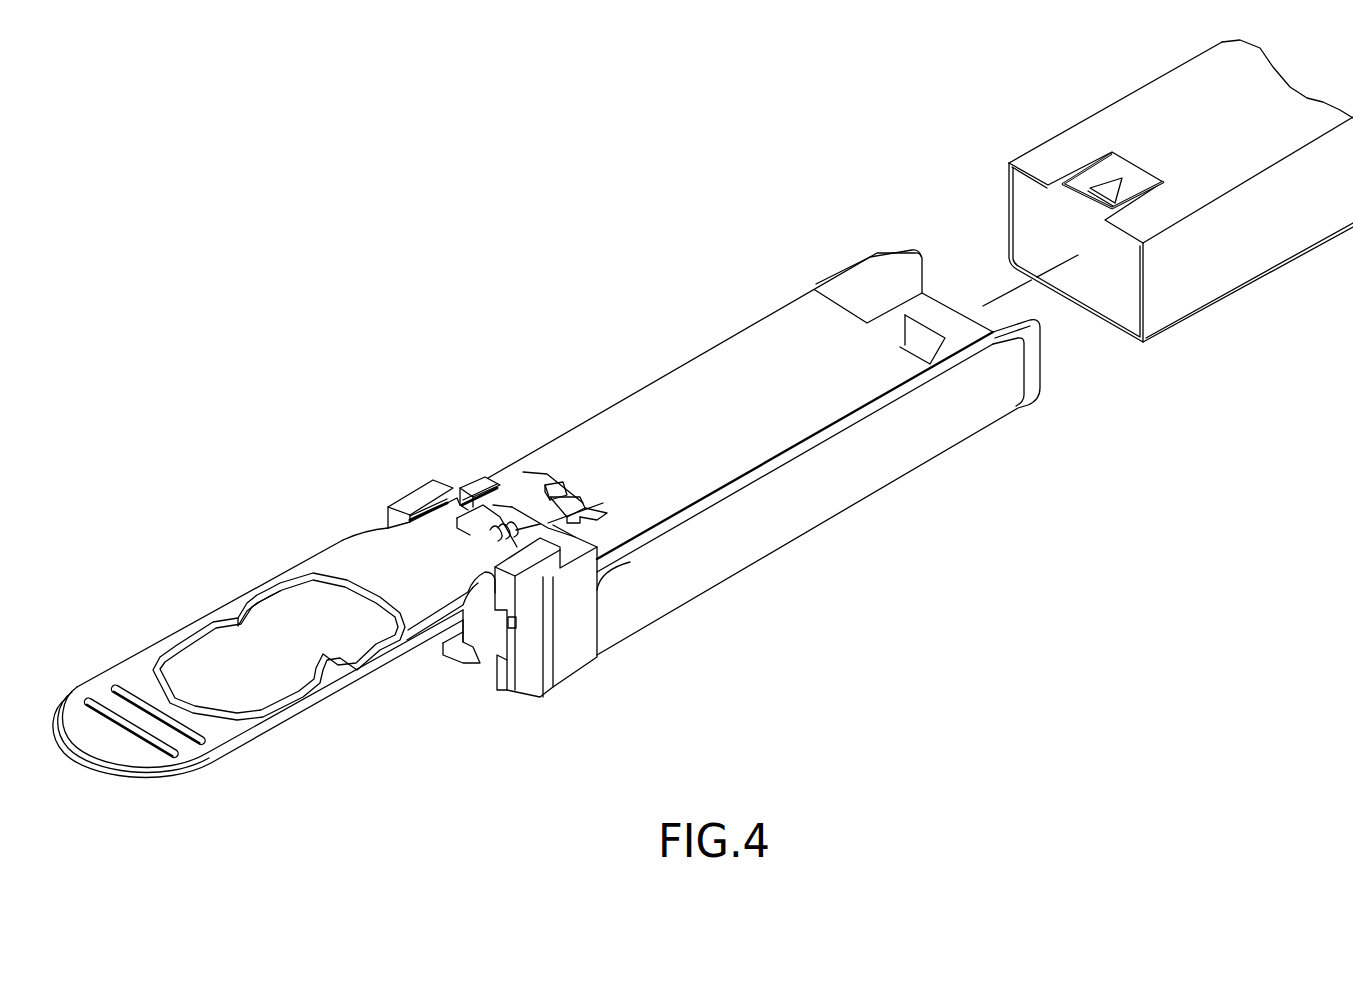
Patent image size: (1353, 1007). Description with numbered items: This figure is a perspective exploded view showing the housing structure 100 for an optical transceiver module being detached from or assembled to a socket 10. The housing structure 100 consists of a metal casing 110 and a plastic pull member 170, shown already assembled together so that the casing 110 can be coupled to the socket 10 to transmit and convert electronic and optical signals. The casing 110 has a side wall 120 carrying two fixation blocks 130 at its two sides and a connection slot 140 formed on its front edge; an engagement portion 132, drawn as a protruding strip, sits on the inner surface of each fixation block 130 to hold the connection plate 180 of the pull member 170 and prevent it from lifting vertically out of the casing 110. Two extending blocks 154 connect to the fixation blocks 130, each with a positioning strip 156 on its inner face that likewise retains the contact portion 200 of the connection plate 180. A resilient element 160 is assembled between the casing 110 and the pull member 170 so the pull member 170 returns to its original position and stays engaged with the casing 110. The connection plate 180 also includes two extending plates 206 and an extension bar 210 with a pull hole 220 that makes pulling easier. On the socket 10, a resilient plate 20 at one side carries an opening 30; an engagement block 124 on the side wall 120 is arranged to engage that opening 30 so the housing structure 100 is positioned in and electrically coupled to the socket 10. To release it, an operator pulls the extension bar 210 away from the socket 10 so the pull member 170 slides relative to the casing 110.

The socket 10 is at (1257, 248).
The resilient plate 20 is at (1103, 192).
The opening 30 is at (1097, 190).
The housing structure 100 is at (639, 392).
The casing 110 is at (882, 467).
The side wall 120 is at (687, 390).
The engagement block 124 is at (580, 498).
The fixation block 130 is at (400, 505).
The engagement portion 132 is at (405, 503).
The connection slot 140 is at (490, 595).
The extending block 154 is at (473, 485).
The positioning strip 156 is at (468, 497).
The resilient element 160 is at (525, 525).
The pull member 170 is at (199, 616).
The connection plate 180 is at (442, 535).
The contact portion 200 is at (528, 512).
The extending plate 206 is at (552, 495).
The extension bar 210 is at (330, 558).
The pull hole 220 is at (283, 620).